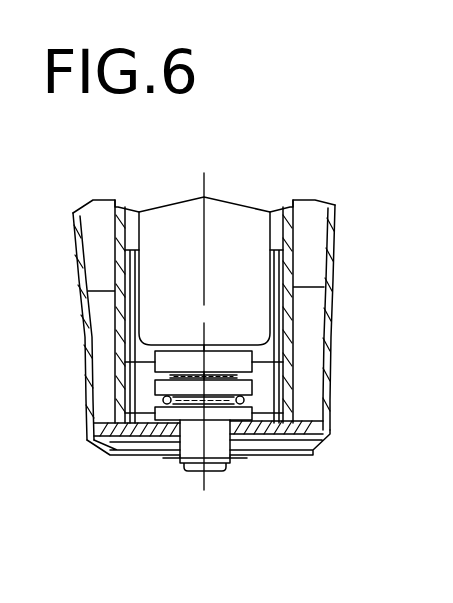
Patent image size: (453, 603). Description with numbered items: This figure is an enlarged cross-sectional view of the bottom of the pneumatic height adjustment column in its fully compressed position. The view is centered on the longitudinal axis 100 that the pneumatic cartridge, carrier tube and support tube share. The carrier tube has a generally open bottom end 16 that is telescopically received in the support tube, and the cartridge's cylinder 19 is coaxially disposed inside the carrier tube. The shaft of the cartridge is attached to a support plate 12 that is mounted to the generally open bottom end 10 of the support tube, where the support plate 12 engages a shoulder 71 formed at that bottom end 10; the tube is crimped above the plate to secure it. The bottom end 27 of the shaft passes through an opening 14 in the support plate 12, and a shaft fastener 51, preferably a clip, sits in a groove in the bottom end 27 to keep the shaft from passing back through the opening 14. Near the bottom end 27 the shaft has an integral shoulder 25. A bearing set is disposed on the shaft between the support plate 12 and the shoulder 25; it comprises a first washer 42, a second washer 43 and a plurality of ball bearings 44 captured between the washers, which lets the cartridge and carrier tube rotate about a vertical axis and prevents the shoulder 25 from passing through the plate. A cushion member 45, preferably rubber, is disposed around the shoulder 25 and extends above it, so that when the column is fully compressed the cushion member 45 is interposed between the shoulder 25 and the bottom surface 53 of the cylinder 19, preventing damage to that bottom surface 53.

The bottom end of the support tube 10 is at (133, 460).
The support plate 12 is at (290, 424).
The opening in the support plate 14 is at (97, 434).
The bottom end of the carrier tube 16 is at (83, 378).
The cylinder 19 is at (230, 230).
The shoulder 25 is at (265, 375).
The bottom end of the shaft 27 is at (219, 436).
The first washer 42 is at (258, 382).
The second washer 43 is at (123, 413).
The ball bearings 44 is at (245, 400).
The cushion member 45 is at (219, 346).
The shaft fastener 51 is at (178, 458).
The bottom surface of the cylinder 53 is at (92, 347).
The shoulder of the support tube 71 is at (320, 420).
The longitudinal axis 100 is at (204, 188).